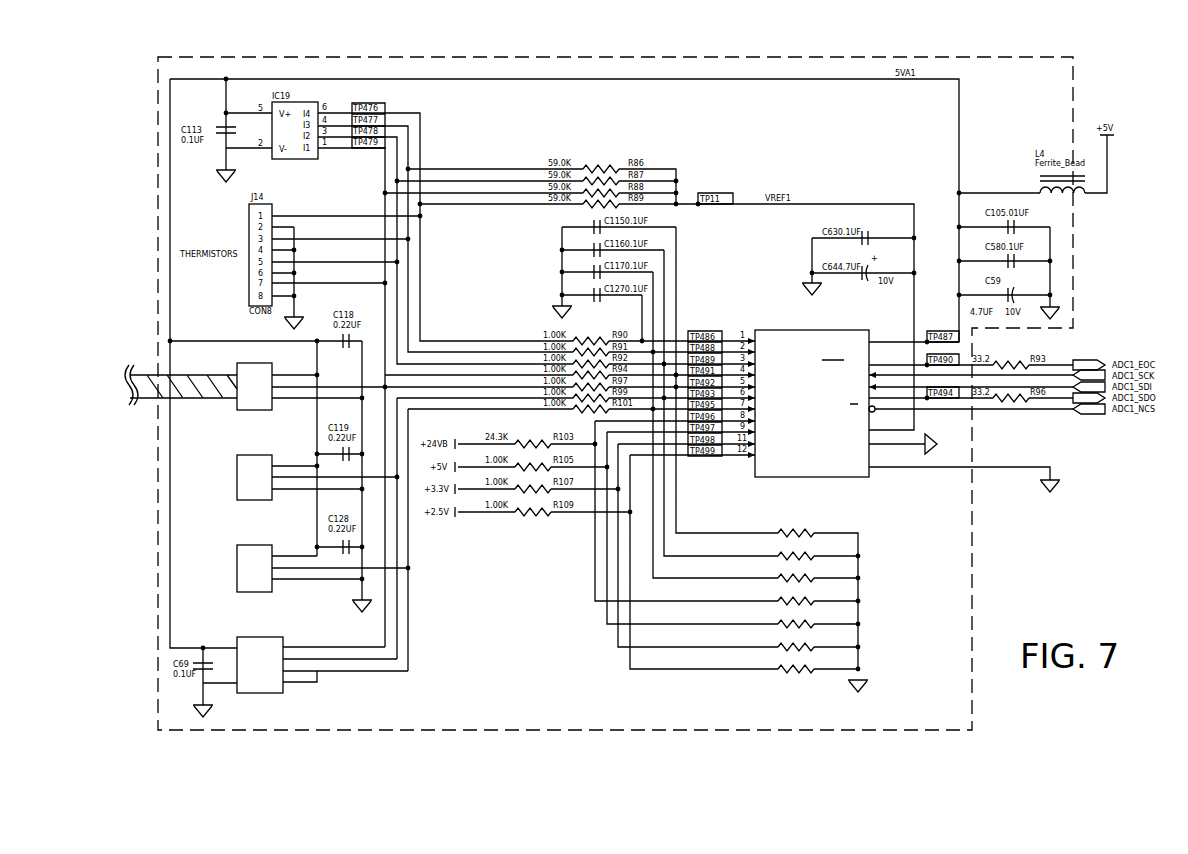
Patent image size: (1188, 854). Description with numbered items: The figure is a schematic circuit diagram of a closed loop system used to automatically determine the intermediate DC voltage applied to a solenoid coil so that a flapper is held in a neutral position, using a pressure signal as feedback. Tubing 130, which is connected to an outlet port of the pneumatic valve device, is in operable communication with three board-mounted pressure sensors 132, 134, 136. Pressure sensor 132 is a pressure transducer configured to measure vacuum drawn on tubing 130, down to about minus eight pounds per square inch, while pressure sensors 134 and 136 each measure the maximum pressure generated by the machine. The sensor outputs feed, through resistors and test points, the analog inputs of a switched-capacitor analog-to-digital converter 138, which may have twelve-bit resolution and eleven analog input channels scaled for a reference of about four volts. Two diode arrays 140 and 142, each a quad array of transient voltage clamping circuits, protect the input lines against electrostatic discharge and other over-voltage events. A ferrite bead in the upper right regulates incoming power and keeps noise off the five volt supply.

The tubing 130 is at (147, 399).
The pressure sensor 132 is at (237, 410).
The pressure sensor 134 is at (237, 478).
The pressure sensor 136 is at (237, 560).
The analog-to-digital converter 138 is at (848, 478).
The diode array 140 is at (303, 160).
The diode array 142 is at (260, 694).